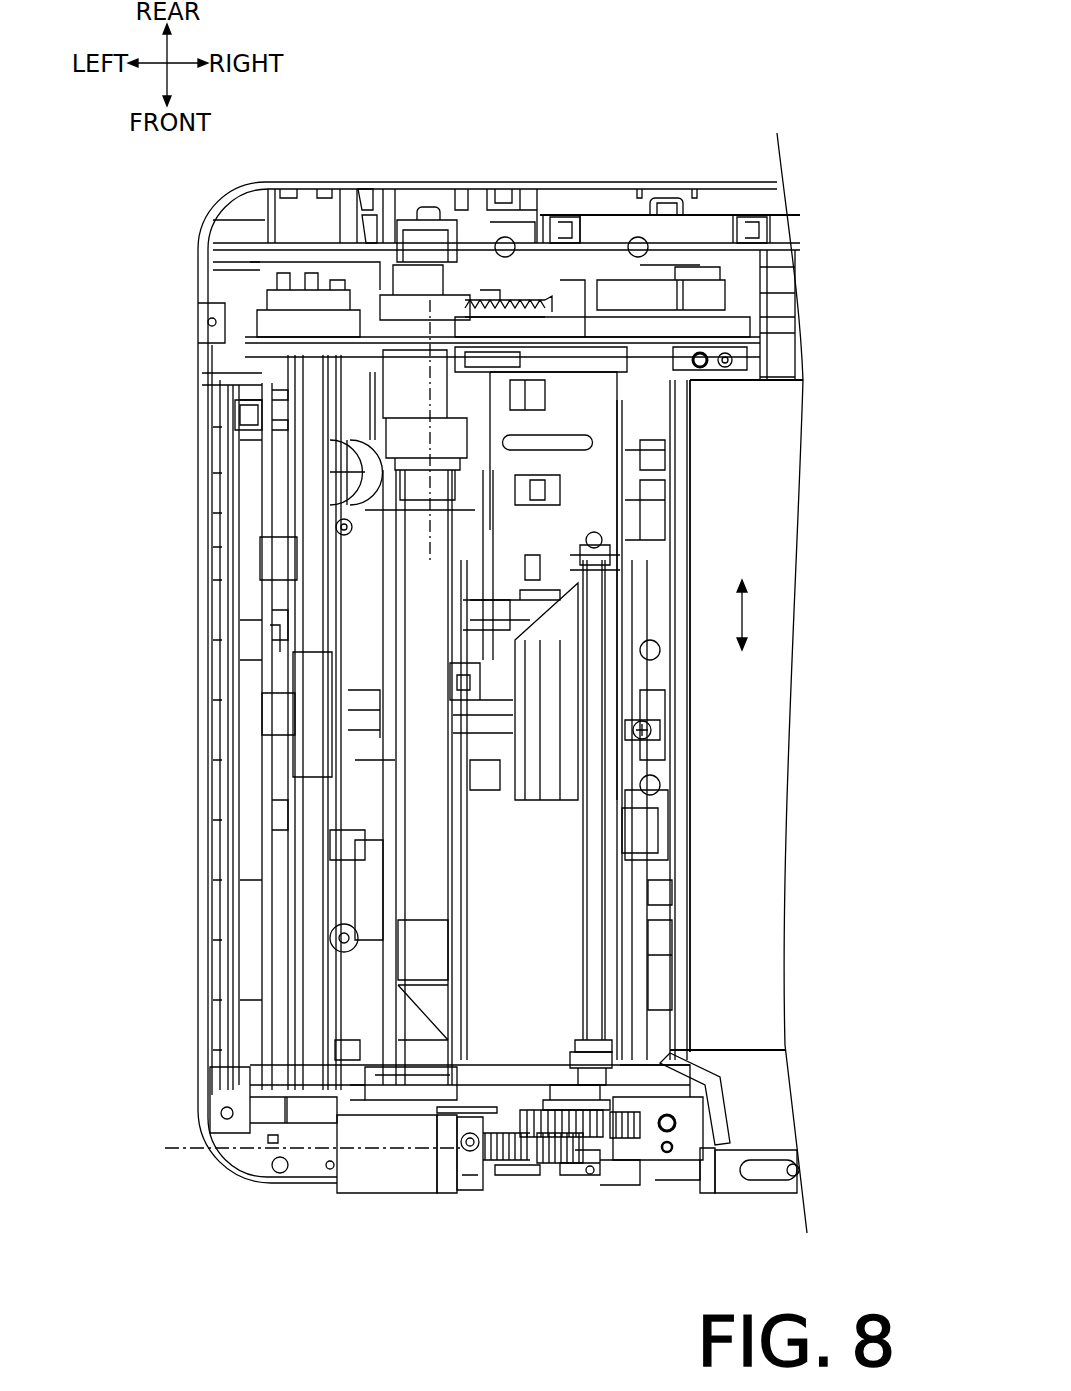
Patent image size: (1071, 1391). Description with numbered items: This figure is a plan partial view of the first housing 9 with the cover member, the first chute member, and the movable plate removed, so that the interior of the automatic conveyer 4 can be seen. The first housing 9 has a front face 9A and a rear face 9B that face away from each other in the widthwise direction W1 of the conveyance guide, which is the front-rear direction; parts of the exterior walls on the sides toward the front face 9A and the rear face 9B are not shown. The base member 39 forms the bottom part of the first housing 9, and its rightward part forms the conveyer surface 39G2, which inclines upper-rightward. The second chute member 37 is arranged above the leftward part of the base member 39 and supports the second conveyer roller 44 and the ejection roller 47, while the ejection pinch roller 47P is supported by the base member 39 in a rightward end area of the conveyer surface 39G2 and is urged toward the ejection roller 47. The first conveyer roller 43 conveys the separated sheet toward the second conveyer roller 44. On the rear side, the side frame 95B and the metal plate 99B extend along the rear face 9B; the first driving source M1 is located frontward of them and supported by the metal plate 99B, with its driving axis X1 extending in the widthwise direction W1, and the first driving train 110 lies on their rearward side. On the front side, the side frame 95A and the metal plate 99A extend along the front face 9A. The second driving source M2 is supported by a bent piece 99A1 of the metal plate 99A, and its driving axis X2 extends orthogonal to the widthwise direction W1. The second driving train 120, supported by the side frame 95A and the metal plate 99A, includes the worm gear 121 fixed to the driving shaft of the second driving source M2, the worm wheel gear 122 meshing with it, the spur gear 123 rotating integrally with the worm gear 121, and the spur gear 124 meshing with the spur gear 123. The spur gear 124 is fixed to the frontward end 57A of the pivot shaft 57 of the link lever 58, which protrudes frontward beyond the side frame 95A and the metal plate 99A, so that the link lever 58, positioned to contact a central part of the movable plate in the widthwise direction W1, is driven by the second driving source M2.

The first housing 9 is at (742, 117).
The rear face 9B is at (660, 182).
The front face 9A is at (777, 1196).
The base member 39 is at (335, 182).
The conveyer surface 39G2 is at (660, 928).
The first driving train 110 is at (448, 268).
The metal plate 99B is at (580, 341).
The side frame 95B is at (586, 362).
The first driving source M1 is at (466, 448).
The driving axis X1 is at (431, 444).
The automatic conveyer 4 is at (250, 675).
The second conveyer roller 44 is at (265, 556).
The first conveyer roller 43 is at (312, 722).
The second chute member 37 is at (356, 901).
The link lever 58 is at (545, 802).
The pivot shaft 57 is at (590, 936).
The frontward end 57A is at (600, 1168).
The ejection roller 47 is at (645, 823).
The ejection pinch roller 47P is at (665, 840).
The widthwise direction W1 is at (763, 615).
The driving axis X2 is at (295, 1147).
The side frame 95A is at (305, 1128).
The metal plate 99A is at (456, 1100).
The bent piece 99A1 is at (470, 1192).
The second driving source M2 is at (447, 1190).
The worm gear 121 is at (514, 1163).
The second driving train 120 is at (525, 1183).
The worm wheel gear 122 is at (577, 1170).
The spur gear 123 is at (553, 1118).
The spur gear 124 is at (626, 1135).